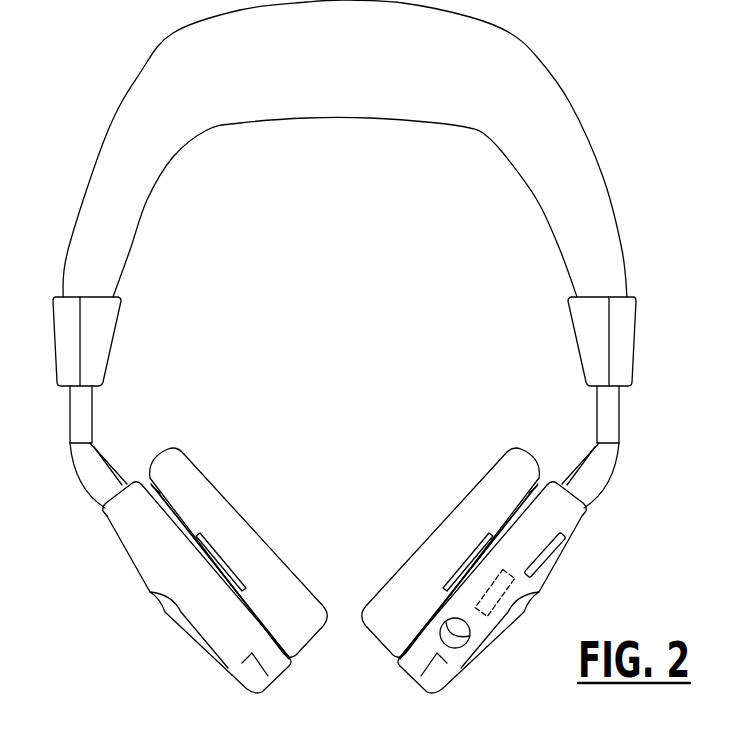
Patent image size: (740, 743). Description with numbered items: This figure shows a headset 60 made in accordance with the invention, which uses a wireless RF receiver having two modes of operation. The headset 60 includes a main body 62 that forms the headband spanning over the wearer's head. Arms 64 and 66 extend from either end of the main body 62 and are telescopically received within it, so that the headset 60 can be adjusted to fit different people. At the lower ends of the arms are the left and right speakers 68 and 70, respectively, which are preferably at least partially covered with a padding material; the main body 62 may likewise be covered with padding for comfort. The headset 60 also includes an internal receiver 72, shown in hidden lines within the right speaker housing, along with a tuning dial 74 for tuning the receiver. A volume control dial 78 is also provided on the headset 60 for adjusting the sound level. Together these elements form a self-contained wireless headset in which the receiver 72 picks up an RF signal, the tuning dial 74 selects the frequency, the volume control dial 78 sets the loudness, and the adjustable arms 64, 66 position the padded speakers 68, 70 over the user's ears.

The headset 60 is at (583, 103).
The main body 62 is at (595, 157).
The arm 64 is at (92, 407).
The arm 66 is at (600, 404).
The left speaker 68 is at (204, 470).
The right speaker 70 is at (480, 475).
The internal receiver 72 is at (533, 587).
The tuning dial 74 is at (553, 558).
The volume control dial 78 is at (468, 636).